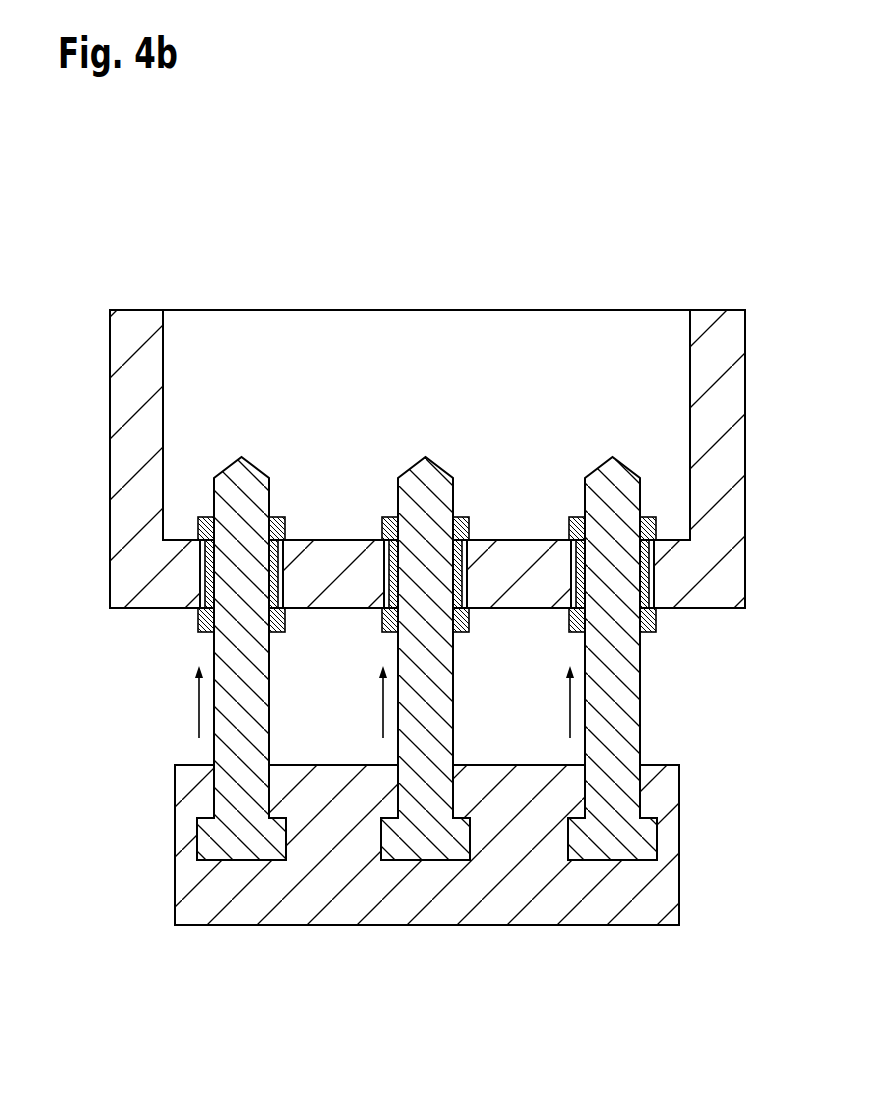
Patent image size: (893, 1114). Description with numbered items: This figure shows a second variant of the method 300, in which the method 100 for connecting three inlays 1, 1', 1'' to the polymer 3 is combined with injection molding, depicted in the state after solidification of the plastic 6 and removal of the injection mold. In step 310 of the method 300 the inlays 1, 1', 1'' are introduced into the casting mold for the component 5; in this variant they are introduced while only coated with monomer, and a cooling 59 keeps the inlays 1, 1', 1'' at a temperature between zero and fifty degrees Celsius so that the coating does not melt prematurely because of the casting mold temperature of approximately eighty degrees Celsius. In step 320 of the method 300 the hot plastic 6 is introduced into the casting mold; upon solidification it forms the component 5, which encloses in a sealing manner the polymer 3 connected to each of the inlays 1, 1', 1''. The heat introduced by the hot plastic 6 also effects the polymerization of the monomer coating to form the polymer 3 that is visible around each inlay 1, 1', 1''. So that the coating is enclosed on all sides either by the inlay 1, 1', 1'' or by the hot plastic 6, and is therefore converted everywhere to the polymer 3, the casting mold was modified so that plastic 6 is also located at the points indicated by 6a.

The method 300 is at (637, 148).
The step of the method 320 is at (717, 283).
The component 5 is at (473, 459).
The plastic 6 is at (730, 505).
The inlay 1 is at (241, 626).
The inlay 1' is at (425, 626).
The inlay 1'' is at (612, 626).
The polymer 3 is at (271, 557).
The points with plastic 6a is at (198, 524).
The step of the method 310 is at (197, 708).
The method 100 is at (243, 872).
The cooling 59 is at (662, 890).